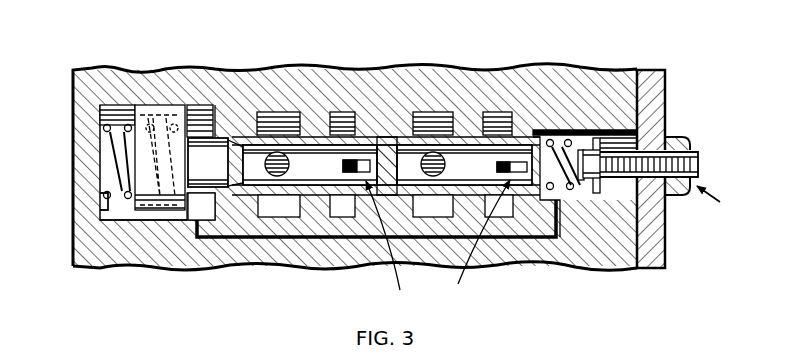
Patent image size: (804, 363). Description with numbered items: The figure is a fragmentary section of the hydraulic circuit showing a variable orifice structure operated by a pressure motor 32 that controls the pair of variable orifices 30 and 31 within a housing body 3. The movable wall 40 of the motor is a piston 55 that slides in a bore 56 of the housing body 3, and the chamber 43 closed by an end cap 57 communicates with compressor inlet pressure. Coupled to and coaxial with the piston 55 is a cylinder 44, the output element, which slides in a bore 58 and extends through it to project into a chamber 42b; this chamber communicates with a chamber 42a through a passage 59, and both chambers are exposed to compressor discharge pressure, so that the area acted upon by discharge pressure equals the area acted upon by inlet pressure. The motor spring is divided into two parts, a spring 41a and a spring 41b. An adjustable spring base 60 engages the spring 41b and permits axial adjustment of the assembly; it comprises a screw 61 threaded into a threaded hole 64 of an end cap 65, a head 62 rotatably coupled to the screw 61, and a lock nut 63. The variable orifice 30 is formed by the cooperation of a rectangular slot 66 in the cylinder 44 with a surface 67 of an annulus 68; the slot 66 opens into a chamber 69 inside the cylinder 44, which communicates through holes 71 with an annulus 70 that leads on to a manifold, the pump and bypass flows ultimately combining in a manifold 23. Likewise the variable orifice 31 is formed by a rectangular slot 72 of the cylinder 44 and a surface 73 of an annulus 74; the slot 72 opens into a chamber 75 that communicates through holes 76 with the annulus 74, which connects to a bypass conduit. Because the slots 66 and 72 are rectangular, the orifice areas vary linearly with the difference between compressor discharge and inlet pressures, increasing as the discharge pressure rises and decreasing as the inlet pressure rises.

The housing body 3 is at (166, 266).
The manifold 23 is at (349, 212).
The variable orifice 30 is at (393, 245).
The variable orifice 31 is at (558, 240).
The pressure motor 32 is at (155, 63).
The movable wall 40 is at (203, 127).
The spring 41a is at (120, 122).
The spring 41b is at (565, 140).
The chamber 42a is at (205, 105).
The chamber 42b is at (620, 148).
The chamber 43 is at (112, 172).
The cylinder 44 is at (194, 172).
The piston 55 is at (150, 220).
The bore 56 is at (100, 210).
The end cap 57 is at (74, 108).
The bore 58 is at (388, 136).
The passage 59 is at (585, 200).
The adjustable spring base 60 is at (719, 207).
The screw 61 is at (702, 154).
The head 62 is at (598, 197).
The lock nut 63 is at (688, 139).
The threaded hole 64 is at (658, 142).
The end cap 65 is at (665, 245).
The rectangular slot 66 is at (343, 170).
The surface 67 is at (345, 118).
The annulus 68 is at (333, 112).
The chamber 69 is at (305, 172).
The annulus 70 is at (270, 212).
The holes 71 is at (278, 152).
The rectangular slot 72 is at (473, 170).
The surface 73 is at (505, 113).
The annulus 74 is at (505, 212).
The chamber 75 is at (471, 238).
The holes 76 is at (442, 130).